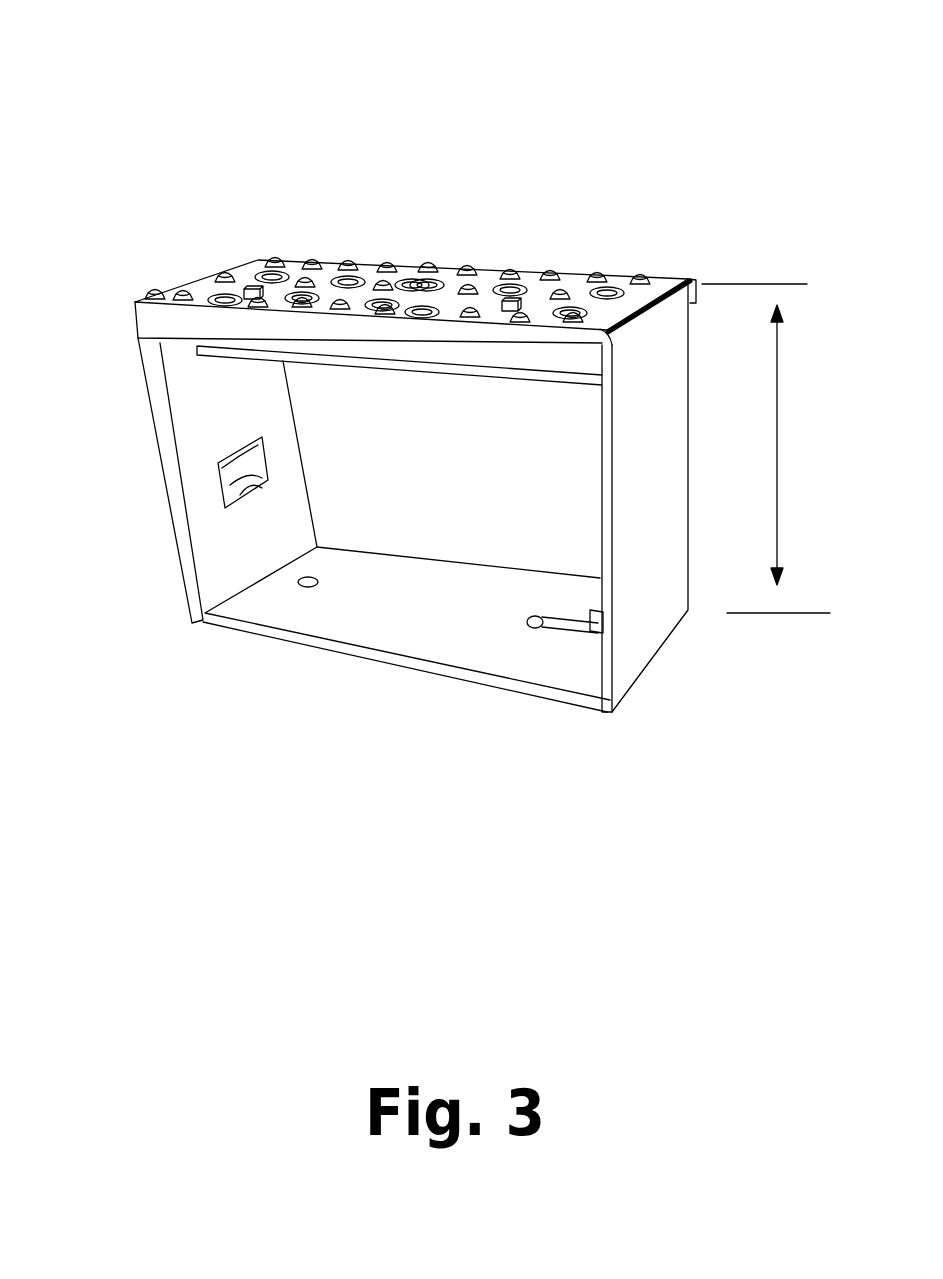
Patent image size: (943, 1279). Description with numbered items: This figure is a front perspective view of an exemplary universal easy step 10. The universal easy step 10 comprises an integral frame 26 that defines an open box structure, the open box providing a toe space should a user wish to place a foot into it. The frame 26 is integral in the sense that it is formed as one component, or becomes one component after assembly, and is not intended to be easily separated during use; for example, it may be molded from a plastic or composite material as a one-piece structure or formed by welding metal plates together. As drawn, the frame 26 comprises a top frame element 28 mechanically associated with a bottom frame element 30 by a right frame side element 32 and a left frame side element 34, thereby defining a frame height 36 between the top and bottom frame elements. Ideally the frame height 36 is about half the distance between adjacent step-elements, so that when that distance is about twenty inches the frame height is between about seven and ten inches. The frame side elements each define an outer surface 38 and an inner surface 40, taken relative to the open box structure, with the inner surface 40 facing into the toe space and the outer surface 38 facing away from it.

The universal easy step 10 is at (435, 440).
The integral frame 26 is at (130, 388).
The top frame element 28 is at (443, 410).
The bottom frame element 30 is at (402, 622).
The right frame side element 32 is at (610, 675).
The left frame side element 34 is at (187, 548).
The frame height 36 is at (772, 448).
The outer surface 38 is at (658, 612).
The inner surface 40 is at (205, 420).